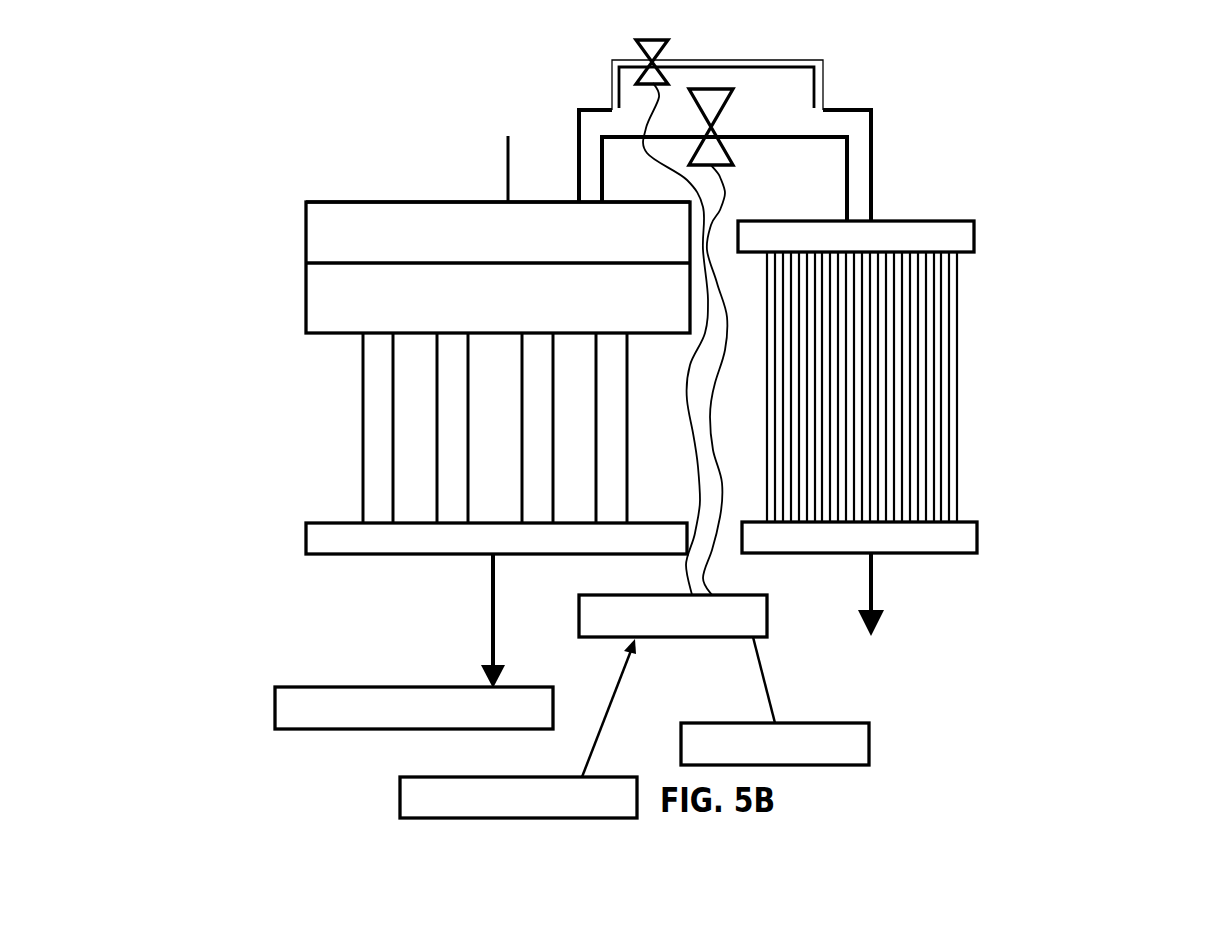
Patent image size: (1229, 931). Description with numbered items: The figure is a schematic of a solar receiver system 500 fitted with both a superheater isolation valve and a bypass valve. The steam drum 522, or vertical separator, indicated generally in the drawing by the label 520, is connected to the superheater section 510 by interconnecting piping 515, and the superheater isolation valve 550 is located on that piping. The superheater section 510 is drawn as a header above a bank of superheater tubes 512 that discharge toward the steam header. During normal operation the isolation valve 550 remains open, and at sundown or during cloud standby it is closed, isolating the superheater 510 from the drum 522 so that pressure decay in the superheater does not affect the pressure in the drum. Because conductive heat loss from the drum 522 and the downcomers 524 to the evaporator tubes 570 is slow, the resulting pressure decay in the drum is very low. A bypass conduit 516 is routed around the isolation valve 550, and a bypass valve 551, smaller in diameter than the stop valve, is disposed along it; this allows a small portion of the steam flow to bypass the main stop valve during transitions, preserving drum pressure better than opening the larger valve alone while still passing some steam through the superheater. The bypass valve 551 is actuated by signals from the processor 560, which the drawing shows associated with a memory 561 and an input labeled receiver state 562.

The receiver system 500 is at (1106, 110).
The superheater section 510 is at (974, 235).
The superheater tubes 512 is at (957, 315).
The interconnecting piping 515 is at (579, 110).
The bypass conduit 516 is at (823, 80).
The steam drum 520 is at (264, 274).
The steam drum 522 is at (306, 230).
The downcomers 524 is at (363, 453).
The superheater isolation valve 550 is at (728, 90).
The bypass valve 551 is at (668, 44).
The processor 560 is at (582, 588).
The memory 561 is at (788, 723).
The receiver state 562 is at (493, 777).
The evaporator tubes 570 is at (283, 729).